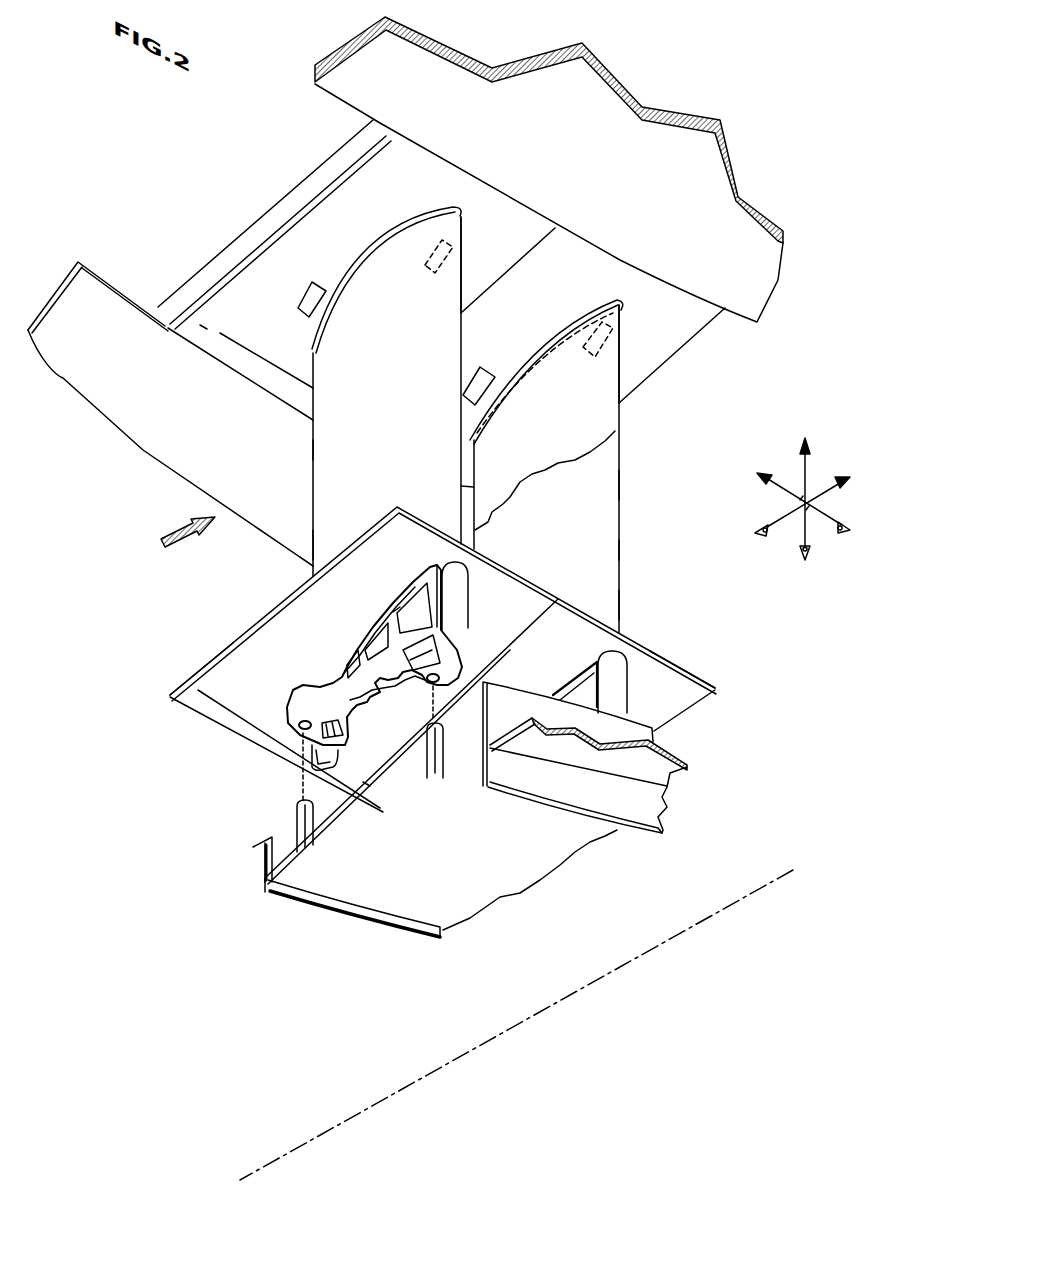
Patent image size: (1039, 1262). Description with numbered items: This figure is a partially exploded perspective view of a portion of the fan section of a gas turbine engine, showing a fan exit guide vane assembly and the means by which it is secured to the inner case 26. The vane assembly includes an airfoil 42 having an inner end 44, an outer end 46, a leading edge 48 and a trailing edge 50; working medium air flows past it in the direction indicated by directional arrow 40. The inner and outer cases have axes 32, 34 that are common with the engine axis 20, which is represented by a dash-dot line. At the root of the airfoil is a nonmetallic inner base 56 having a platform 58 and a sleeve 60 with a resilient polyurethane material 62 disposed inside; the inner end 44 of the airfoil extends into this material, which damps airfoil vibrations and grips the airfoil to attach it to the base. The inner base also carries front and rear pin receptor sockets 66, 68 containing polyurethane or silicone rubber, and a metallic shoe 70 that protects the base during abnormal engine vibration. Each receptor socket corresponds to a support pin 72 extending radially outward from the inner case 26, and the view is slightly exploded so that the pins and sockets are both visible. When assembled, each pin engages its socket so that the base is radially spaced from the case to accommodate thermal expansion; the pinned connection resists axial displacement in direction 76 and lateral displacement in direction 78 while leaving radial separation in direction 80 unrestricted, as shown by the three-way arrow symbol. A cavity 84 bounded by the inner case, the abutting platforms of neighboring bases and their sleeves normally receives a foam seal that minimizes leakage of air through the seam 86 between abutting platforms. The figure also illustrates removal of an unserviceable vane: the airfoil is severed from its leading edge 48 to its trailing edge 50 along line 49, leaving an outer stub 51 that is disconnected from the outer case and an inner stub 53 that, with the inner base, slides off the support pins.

The engine axis 20 is at (519, 999).
The inner case 26 is at (540, 865).
The axis of the inner case 32 is at (519, 999).
The axis of the outer case 34 is at (717, 907).
The directional arrow 40 is at (172, 528).
The airfoil 42 is at (320, 452).
The inner end 44 is at (313, 560).
The outer end 46 is at (370, 267).
The leading edge 48 is at (313, 543).
The line 49 is at (558, 462).
The trailing edge 50 is at (461, 310).
The outer stub 51 is at (580, 318).
The inner stub 53 is at (603, 497).
The inner base 56 is at (202, 708).
The platform 58 is at (233, 645).
The sleeve 60 is at (458, 595).
The resilient polyurethane material 62 is at (360, 693).
The front pin receptor socket 66 is at (302, 733).
The rear pin receptor socket 68 is at (433, 683).
The metallic shoe 70 is at (395, 612).
The support pin 72 is at (295, 825).
The axial direction 76 is at (830, 480).
The lateral direction 78 is at (827, 520).
The radial direction 80 is at (810, 467).
The cavity 84 is at (383, 780).
The seam 86 is at (503, 648).